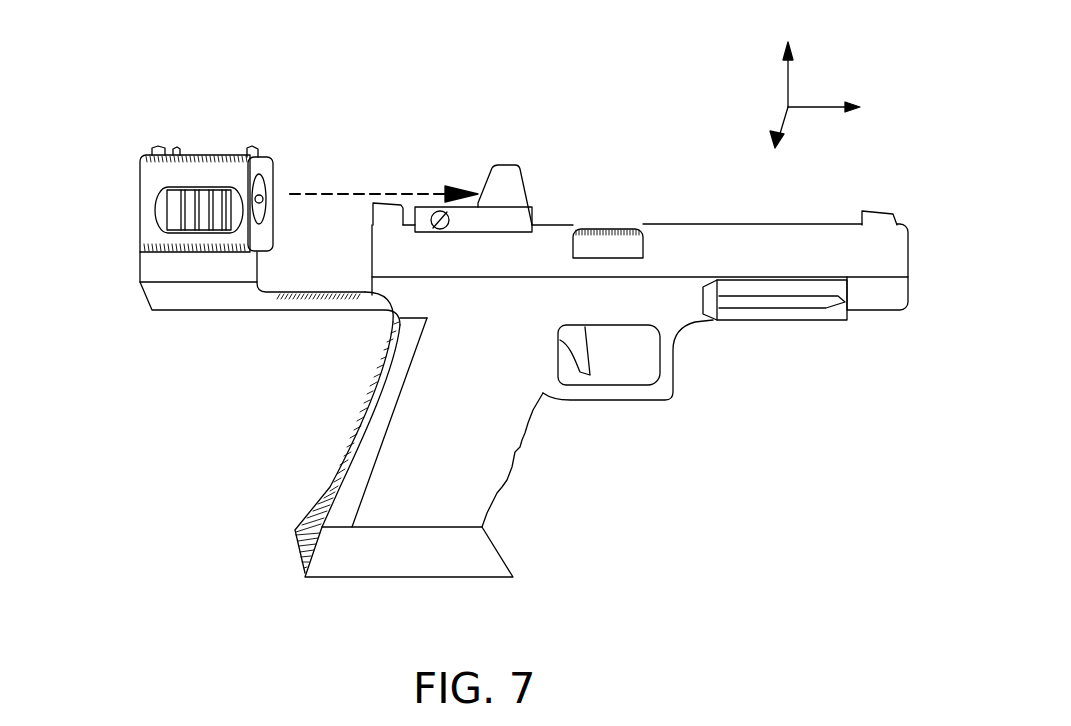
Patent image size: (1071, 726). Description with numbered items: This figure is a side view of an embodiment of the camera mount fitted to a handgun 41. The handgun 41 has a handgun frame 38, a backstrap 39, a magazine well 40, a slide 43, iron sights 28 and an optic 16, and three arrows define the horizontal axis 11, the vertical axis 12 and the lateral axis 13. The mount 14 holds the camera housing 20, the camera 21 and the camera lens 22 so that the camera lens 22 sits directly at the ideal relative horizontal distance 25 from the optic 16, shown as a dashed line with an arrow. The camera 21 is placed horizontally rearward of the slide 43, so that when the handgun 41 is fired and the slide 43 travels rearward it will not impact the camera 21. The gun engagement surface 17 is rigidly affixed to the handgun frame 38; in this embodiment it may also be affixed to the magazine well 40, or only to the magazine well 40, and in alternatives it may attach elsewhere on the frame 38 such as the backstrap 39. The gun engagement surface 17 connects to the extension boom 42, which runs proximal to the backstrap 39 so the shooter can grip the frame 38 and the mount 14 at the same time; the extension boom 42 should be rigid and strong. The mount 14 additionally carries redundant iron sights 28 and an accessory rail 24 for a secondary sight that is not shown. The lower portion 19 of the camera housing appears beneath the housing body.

The horizontal axis 11 is at (838, 107).
The vertical axis 12 is at (789, 64).
The lateral axis 13 is at (773, 138).
The mount 14 is at (236, 254).
The optic 16 is at (533, 200).
The gun engagement surface 17 is at (360, 427).
The lower housing portion 19 is at (170, 266).
The camera housing 20 is at (148, 246).
The camera 21 is at (265, 170).
The camera lens 22 is at (265, 197).
The accessory rail 24 is at (172, 190).
The ideal relative horizontal distance 25 is at (393, 193).
The iron sights 28 is at (157, 147).
The handgun frame 38 is at (487, 446).
The backstrap 39 is at (363, 467).
The magazine well 40 is at (482, 551).
The handgun 41 is at (714, 318).
The extension boom 42 is at (296, 312).
The slide 43 is at (705, 238).